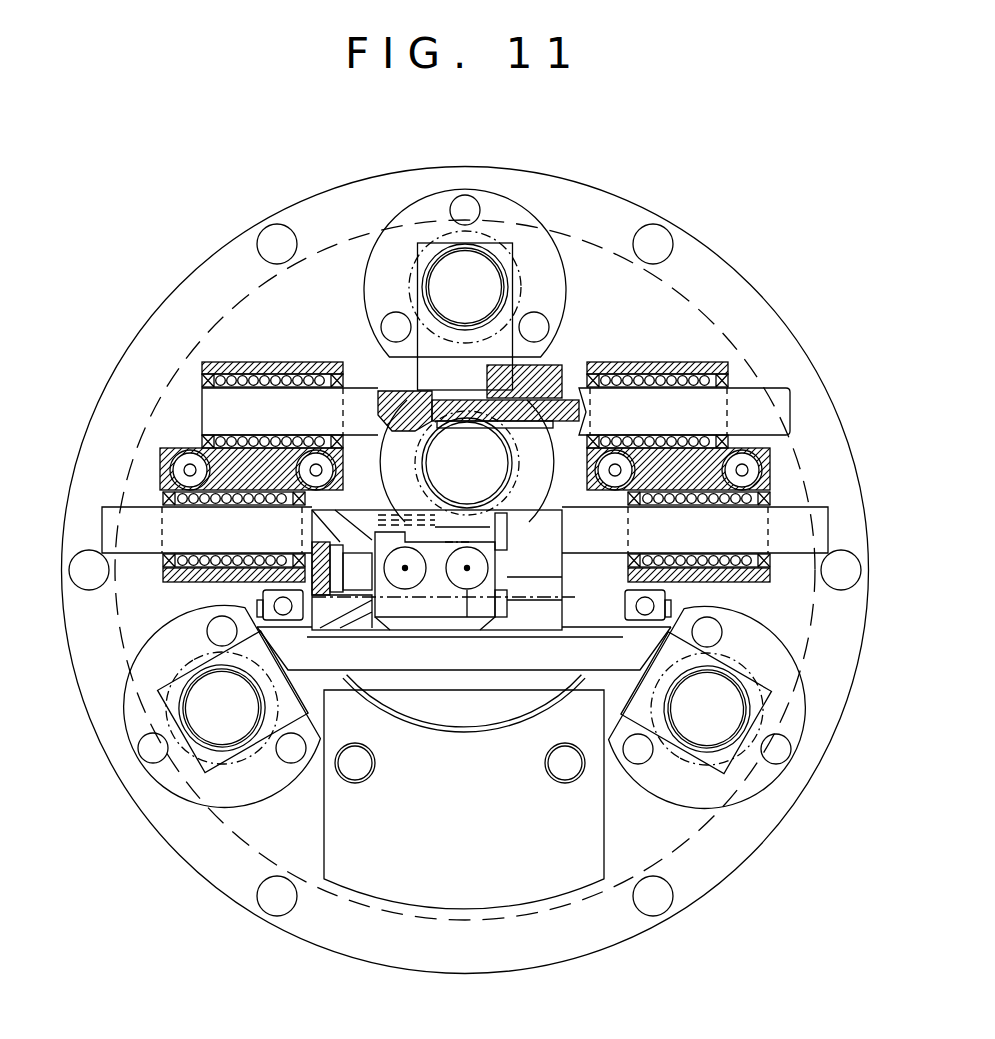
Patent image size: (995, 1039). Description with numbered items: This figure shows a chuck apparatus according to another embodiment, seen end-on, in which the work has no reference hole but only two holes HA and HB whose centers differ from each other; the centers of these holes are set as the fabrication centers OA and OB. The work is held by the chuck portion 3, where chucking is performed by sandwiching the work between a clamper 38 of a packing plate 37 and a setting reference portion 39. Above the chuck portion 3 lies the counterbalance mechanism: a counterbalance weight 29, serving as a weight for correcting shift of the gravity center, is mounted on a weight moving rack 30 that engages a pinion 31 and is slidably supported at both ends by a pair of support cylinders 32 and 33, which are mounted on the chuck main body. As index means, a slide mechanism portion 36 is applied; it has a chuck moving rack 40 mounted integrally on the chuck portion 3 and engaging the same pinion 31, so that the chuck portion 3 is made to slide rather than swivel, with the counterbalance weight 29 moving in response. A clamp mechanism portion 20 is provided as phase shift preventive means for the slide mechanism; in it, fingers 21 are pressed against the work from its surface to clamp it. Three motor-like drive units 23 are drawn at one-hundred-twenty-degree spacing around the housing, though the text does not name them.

The chuck portion 3 is at (562, 573).
The clamp mechanism portion 20 is at (171, 665).
The fingers 21 is at (515, 338).
The motor 23 is at (518, 277).
The counterbalance weight 29 is at (548, 372).
The weight moving rack 30 is at (440, 400).
The pinion 31 is at (405, 422).
The support cylinder 32 is at (268, 362).
The support cylinder 33 is at (648, 362).
The slide mechanism portion 36 is at (790, 595).
The packing plate 37 is at (467, 572).
The clamper 38 is at (357, 582).
The setting reference portion 39 is at (507, 575).
The chuck moving rack 40 is at (388, 512).
The fabrication center OA is at (488, 562).
The hole HA is at (470, 568).
The fabrication center OB is at (407, 572).
The hole HB is at (405, 572).